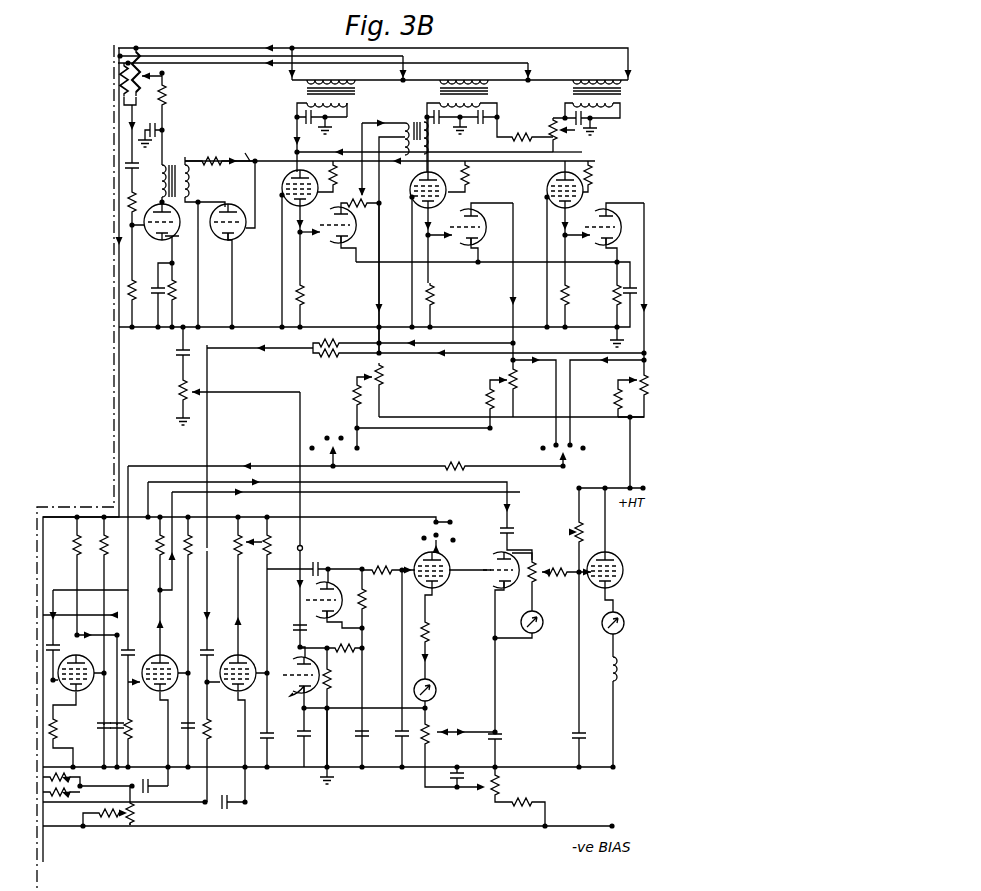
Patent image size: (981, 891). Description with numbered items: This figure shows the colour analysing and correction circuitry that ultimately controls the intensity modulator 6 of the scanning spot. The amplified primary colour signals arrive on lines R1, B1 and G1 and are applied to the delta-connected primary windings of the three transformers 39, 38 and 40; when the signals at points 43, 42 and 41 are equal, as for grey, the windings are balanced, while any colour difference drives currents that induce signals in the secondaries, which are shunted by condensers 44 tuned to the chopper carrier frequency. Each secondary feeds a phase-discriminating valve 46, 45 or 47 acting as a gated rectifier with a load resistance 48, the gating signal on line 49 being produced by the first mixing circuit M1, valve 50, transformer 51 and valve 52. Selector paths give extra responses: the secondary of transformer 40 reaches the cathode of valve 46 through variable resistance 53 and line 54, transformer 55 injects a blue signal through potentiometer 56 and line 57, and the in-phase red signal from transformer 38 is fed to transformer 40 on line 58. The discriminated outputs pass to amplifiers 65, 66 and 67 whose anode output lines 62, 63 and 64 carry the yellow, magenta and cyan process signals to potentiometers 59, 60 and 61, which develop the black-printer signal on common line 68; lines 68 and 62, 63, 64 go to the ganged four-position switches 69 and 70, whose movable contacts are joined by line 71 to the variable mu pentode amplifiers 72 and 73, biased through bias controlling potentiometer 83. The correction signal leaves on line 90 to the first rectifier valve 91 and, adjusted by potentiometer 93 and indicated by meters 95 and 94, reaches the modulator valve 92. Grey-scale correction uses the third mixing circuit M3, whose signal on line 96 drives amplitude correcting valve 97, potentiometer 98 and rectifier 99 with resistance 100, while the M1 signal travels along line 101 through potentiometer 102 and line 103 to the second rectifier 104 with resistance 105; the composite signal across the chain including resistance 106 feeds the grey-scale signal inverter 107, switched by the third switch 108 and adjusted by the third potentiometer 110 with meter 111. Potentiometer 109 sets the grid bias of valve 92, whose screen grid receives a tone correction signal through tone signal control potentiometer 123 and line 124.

The red primary colour signal line R1 is at (198, 44).
The blue primary colour signal line B1 is at (214, 56).
The green primary colour signal line G1 is at (244, 60).
The point 43 is at (294, 50).
The point 42 is at (406, 86).
The point 41 is at (529, 77).
The transformer 39 is at (350, 96).
The transformer 38 is at (491, 97).
The transformer 40 is at (620, 97).
The condenser 44 is at (296, 128).
The line 58 is at (551, 133).
The variable resistance 53 is at (582, 152).
The line 54 is at (362, 154).
The transformer 55 is at (414, 160).
The line 49 is at (221, 150).
The first mixing circuit M1 is at (168, 76).
The transformer 51 is at (192, 181).
The valve 50 is at (162, 246).
The valve 52 is at (226, 244).
The phase-discriminating valve 46 is at (289, 188).
The line 57 is at (306, 248).
The load resistance 48 is at (306, 300).
The potentiometer 56 is at (377, 208).
The amplifier 65 is at (343, 258).
The anode output line 62 is at (379, 298).
The phase-discriminating valve 45 is at (446, 186).
The amplifier 66 is at (466, 260).
The anode output line 63 is at (513, 298).
The phase-discriminating valve 47 is at (582, 186).
The amplifier 67 is at (597, 260).
The anode output line 64 is at (648, 242).
The line 101 is at (182, 348).
The potentiometer 102 is at (193, 396).
The line 96 is at (207, 432).
The third mixing circuit M3 is at (322, 356).
The potentiometer 59 is at (389, 385).
The potentiometer 60 is at (516, 385).
The potentiometer 61 is at (628, 374).
The common line 68 is at (456, 417).
The first four-position switch 69 is at (297, 450).
The second four-position switch 70 is at (543, 448).
The line 71 is at (407, 469).
The line 124 is at (526, 487).
The line 90 is at (162, 592).
The potentiometer 98 is at (262, 542).
The variable mu pentode amplifier 72 is at (86, 667).
The second variable mu pentode amplifier 73 is at (170, 667).
The amplitude correcting valve 97 is at (248, 667).
The line 103 is at (300, 547).
The rectifier 99 is at (312, 604).
The resistance 100 is at (362, 601).
The second rectifier 104 is at (298, 668).
The resistance 106 is at (362, 650).
The resistance 105 is at (330, 686).
The third switch 108 is at (461, 541).
The grey-scale signal inverter 107 is at (430, 594).
The meter 111 is at (436, 688).
The third potentiometer 110 is at (445, 731).
The potentiometer 109 is at (484, 792).
The bias controlling potentiometer 83 is at (64, 812).
The first rectifier valve 91 is at (491, 599).
The colour correction signal modifying potentiometer 93 is at (550, 591).
The meter 95 is at (541, 628).
The tone signal control potentiometer 123 is at (574, 532).
The modulator valve 92 is at (604, 558).
The meter 94 is at (608, 617).
The intensity modulator 6 is at (610, 670).